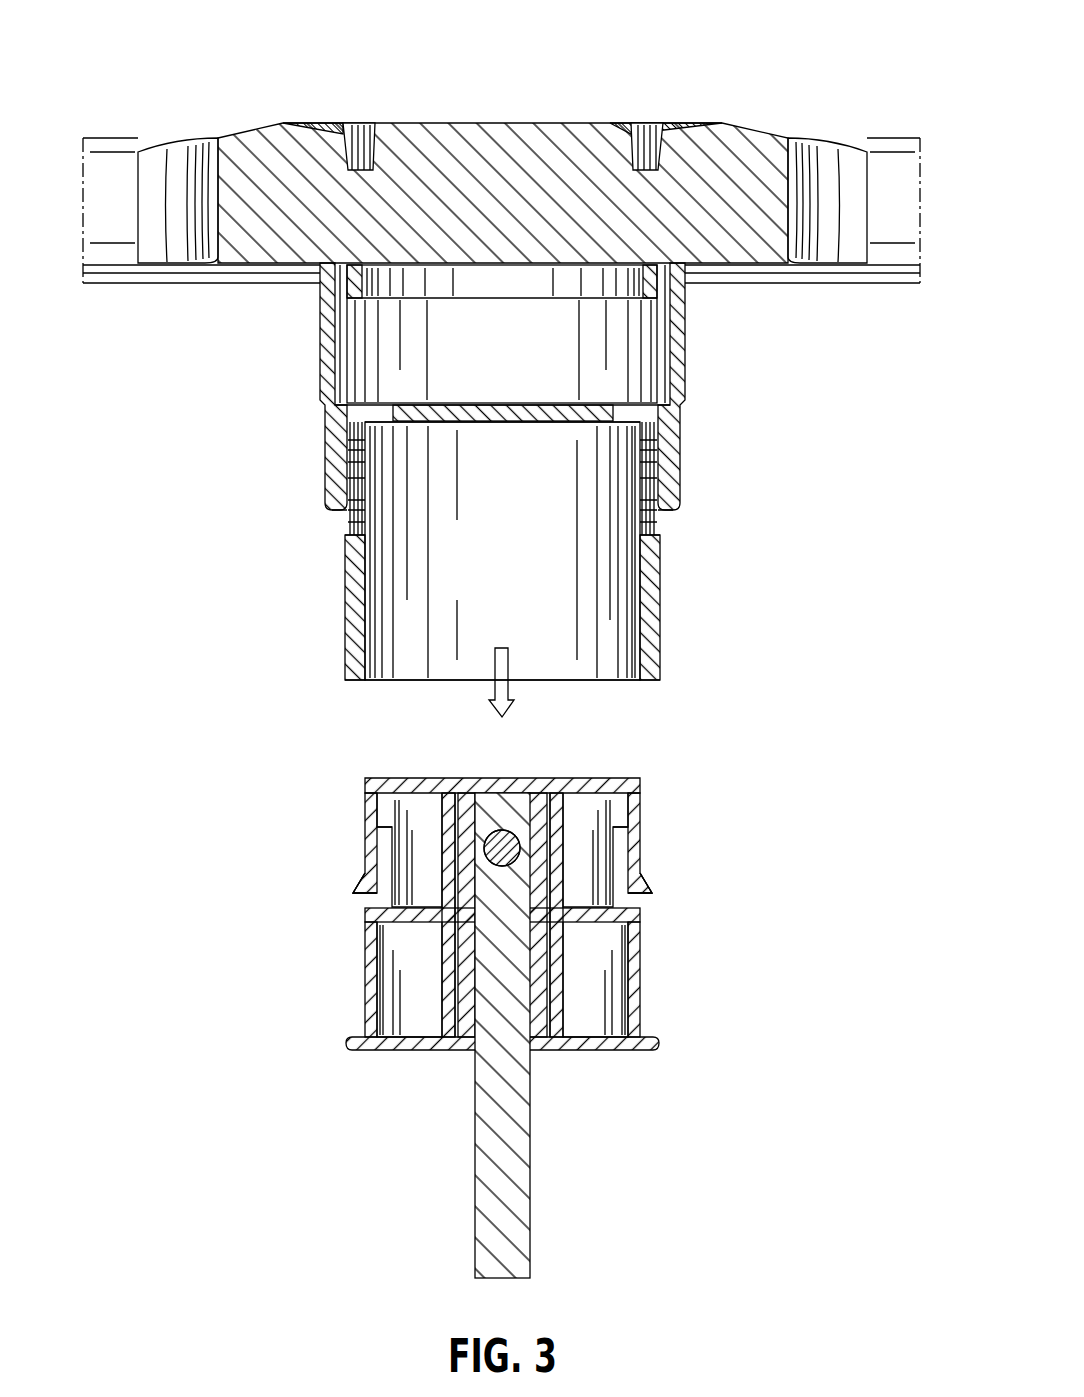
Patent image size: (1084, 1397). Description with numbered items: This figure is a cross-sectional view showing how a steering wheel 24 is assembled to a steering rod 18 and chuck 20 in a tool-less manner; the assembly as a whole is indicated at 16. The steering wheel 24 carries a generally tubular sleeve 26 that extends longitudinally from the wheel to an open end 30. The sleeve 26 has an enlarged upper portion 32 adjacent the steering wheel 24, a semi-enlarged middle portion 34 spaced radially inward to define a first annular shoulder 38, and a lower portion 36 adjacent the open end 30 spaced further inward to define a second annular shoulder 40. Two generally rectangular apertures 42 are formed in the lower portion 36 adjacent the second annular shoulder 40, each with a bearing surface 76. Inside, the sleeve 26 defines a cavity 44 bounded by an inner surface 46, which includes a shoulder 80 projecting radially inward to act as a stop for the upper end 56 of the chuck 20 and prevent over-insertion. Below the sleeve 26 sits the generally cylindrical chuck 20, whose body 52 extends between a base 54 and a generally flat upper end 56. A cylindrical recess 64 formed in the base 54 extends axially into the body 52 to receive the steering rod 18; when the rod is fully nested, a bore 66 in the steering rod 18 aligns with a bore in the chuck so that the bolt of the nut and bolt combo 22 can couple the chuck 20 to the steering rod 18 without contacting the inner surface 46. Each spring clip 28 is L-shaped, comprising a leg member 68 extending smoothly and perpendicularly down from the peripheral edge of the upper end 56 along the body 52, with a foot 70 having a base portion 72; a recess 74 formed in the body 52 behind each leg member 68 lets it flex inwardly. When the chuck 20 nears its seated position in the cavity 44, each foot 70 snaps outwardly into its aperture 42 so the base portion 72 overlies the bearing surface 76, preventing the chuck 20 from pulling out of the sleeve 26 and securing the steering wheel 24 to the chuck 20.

The fastener assembly 16 is at (126, 66).
The steering rod 18 is at (655, 1043).
The chuck 20 is at (265, 898).
The nut and bolt combo 22 is at (503, 867).
The steering wheel 24 is at (509, 124).
The sleeve 26 is at (230, 476).
The spring clip 28 is at (300, 846).
The open end 30 is at (357, 681).
The enlarged upper portion 32 is at (687, 338).
The middle portion 34 is at (682, 464).
The lower portion 36 is at (658, 620).
The first annular shoulder 38 is at (326, 418).
The second annular shoulder 40 is at (346, 510).
The aperture 42 is at (357, 524).
The cavity 44 is at (548, 501).
The inner surface 46 is at (519, 592).
The body 52 is at (362, 975).
The base 54 is at (578, 1052).
The upper end 56 is at (592, 779).
The cylindrical recess 64 is at (472, 1052).
The bore 66 is at (509, 836).
The leg member 68 is at (372, 815).
The foot 70 is at (354, 878).
The base portion 72 is at (358, 893).
The recess 74 is at (384, 849).
The bearing surface 76 is at (358, 528).
The shoulder 80 is at (558, 423).